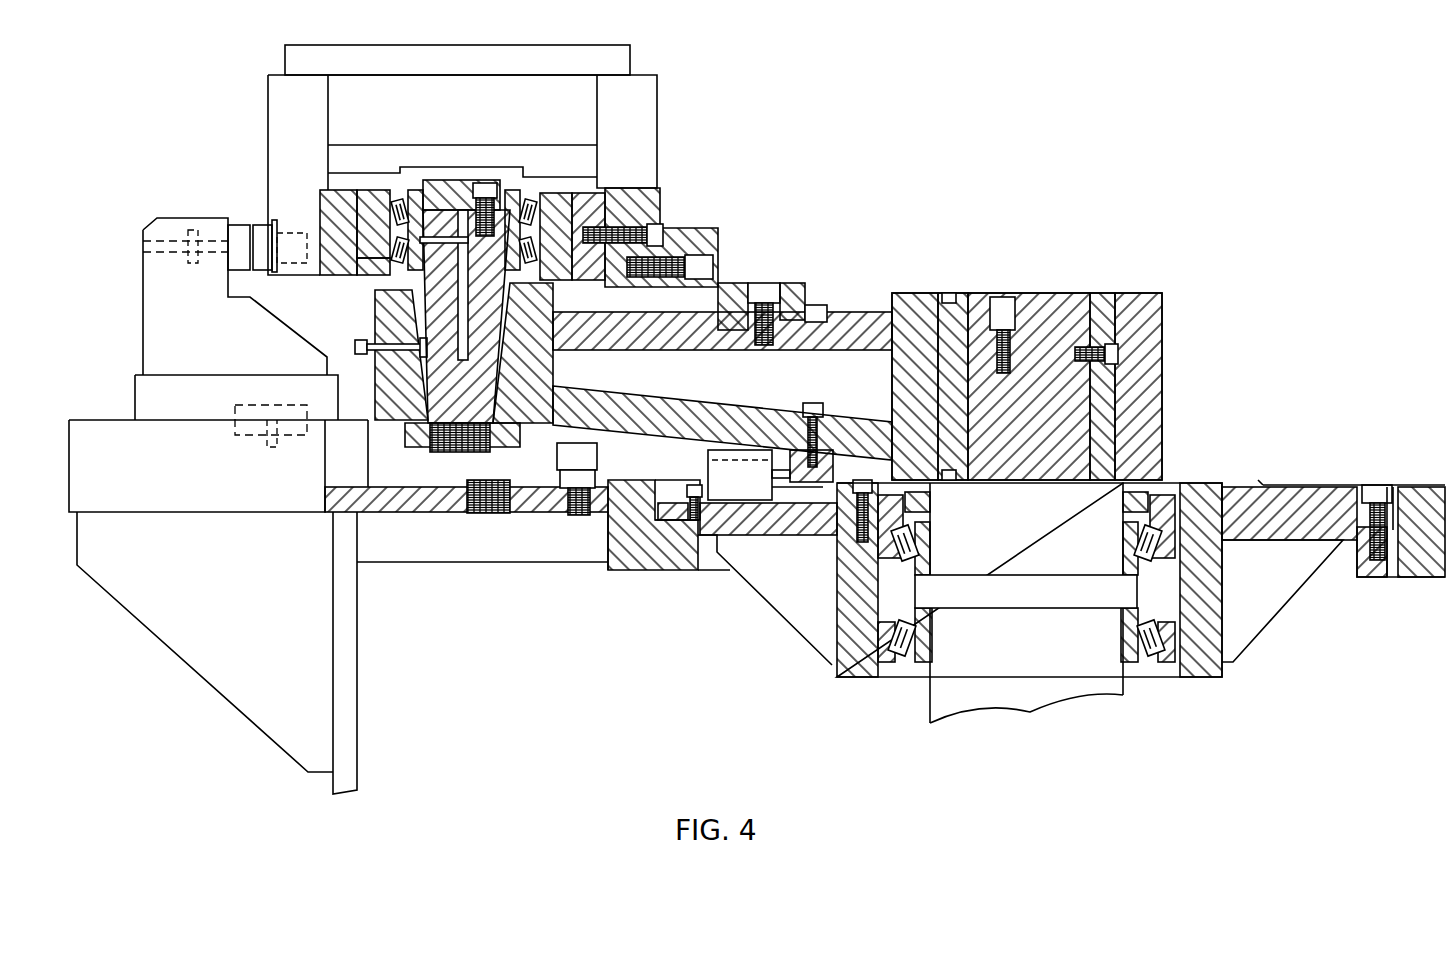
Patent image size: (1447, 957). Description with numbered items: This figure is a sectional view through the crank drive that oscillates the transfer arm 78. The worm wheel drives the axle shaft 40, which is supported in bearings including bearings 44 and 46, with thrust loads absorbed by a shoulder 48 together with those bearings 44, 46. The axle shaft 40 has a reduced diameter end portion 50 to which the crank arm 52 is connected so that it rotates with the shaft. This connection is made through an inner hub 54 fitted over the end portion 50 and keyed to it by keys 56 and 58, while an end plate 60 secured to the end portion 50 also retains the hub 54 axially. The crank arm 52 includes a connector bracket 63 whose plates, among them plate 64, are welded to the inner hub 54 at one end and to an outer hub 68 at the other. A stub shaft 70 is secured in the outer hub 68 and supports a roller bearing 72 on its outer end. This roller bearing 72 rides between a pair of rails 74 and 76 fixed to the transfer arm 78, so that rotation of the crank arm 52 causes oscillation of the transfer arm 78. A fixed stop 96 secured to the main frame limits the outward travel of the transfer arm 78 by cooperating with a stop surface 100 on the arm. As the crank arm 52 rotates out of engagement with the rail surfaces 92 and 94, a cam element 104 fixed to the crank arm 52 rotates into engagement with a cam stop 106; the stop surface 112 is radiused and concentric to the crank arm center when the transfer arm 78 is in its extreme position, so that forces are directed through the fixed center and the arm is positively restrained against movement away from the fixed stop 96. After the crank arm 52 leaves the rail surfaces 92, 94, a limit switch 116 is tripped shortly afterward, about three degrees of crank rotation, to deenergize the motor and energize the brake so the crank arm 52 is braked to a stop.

The axle shaft 40 is at (930, 690).
The bearing 44 is at (940, 645).
The bearing 46 is at (940, 535).
The shoulder 48 is at (1007, 591).
The reduced diameter end portion 50 is at (1093, 295).
The crank arm 52 is at (855, 308).
The inner hub 54 is at (952, 318).
The key 56 is at (1020, 297).
The key 58 is at (1125, 330).
The end plate 60 is at (1028, 295).
The connector bracket 63 is at (823, 283).
The plate 64 is at (893, 296).
The outer hub 68 is at (378, 318).
The stub shaft 70 is at (520, 285).
The roller bearing 72 is at (374, 186).
The rail 74 is at (330, 195).
The rail 76 is at (612, 210).
The transfer arm 78 is at (663, 137).
The rail surface 92 is at (360, 262).
The rail surface 94 is at (548, 195).
The fixed stop 96 is at (235, 226).
The stop surface 100 is at (262, 222).
The cam element 104 is at (762, 280).
The cam stop 106 is at (668, 256).
The cam stop surface 112 is at (735, 283).
The limit switch 116 is at (708, 470).